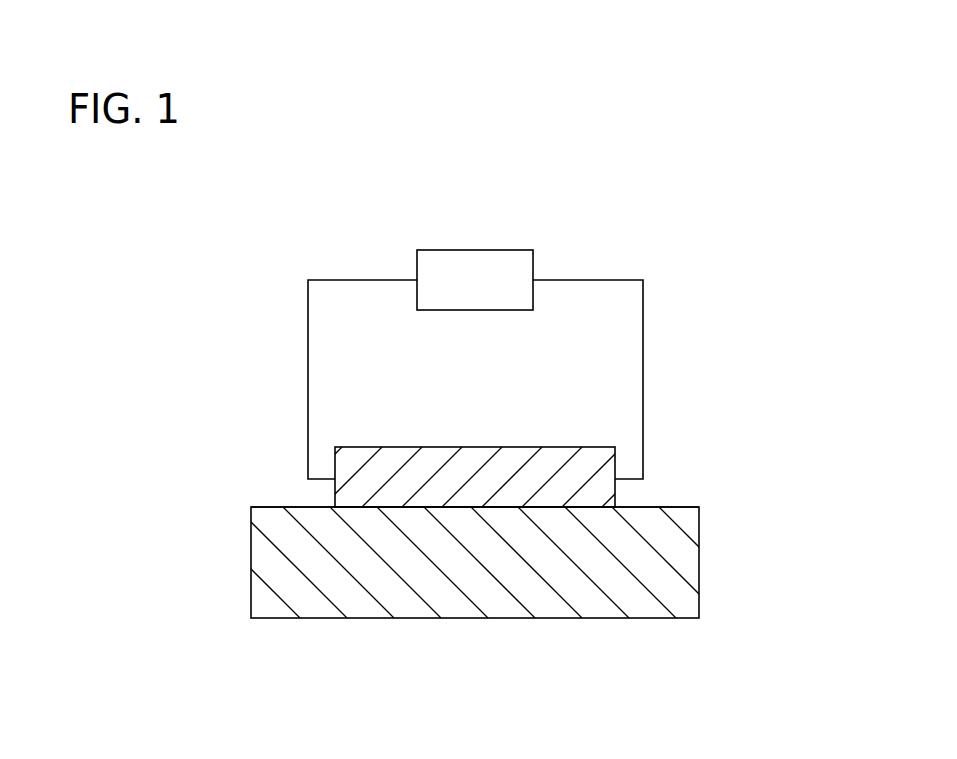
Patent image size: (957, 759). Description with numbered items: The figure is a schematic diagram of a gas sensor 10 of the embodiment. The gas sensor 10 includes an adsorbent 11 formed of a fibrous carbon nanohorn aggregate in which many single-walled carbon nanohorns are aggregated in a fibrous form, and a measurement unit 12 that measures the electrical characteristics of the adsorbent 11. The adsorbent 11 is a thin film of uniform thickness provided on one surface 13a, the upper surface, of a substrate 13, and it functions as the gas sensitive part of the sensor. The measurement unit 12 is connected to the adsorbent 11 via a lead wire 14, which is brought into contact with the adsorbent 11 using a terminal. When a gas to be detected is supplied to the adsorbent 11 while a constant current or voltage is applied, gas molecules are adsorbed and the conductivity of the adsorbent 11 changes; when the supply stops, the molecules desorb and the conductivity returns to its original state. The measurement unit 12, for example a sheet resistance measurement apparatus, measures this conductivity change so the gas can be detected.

The gas sensor 10 is at (775, 278).
The adsorbent 11 is at (494, 447).
The measurement unit 12 is at (475, 250).
The substrate 13 is at (700, 556).
The one surface 13a is at (686, 507).
The lead wire 14 is at (308, 360).